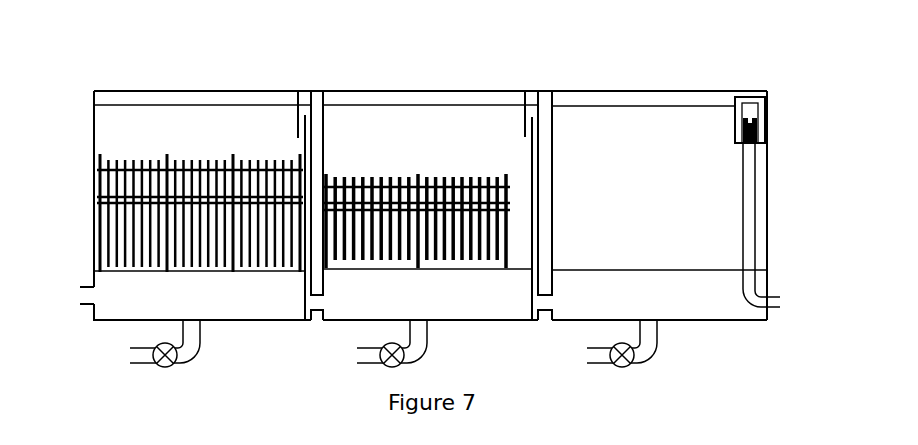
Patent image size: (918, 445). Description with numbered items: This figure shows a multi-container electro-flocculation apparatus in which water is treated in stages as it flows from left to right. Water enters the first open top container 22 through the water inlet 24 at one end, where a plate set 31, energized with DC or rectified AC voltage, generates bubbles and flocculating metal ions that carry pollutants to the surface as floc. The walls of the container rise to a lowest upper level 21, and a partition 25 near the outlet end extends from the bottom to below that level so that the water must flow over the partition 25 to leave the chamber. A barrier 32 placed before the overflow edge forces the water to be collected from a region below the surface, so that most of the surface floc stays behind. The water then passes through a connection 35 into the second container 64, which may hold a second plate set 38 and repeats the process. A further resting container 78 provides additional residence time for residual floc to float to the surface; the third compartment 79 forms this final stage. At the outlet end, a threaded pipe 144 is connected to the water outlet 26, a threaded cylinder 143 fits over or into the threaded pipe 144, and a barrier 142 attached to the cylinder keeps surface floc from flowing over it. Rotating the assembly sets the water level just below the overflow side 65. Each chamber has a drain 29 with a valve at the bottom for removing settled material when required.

The open top container 22 is at (93, 88).
The lowest upper level 21 is at (338, 105).
The barrier 32 is at (297, 114).
The partition 25 is at (304, 147).
The plate set 31 is at (184, 221).
The water inlet 24 is at (78, 297).
The drain 29 is at (583, 363).
The second container 64 is at (322, 88).
The overflow side 65 is at (412, 105).
The resting container 78 is at (547, 90).
The third tank compartment 79 is at (638, 103).
The barrier 142 is at (768, 92).
The threaded cylinder 143 is at (763, 113).
The threaded pipe 144 is at (760, 143).
The second plate set 38 is at (476, 235).
The water outlet 26 is at (780, 301).
The connection 35 is at (318, 302).